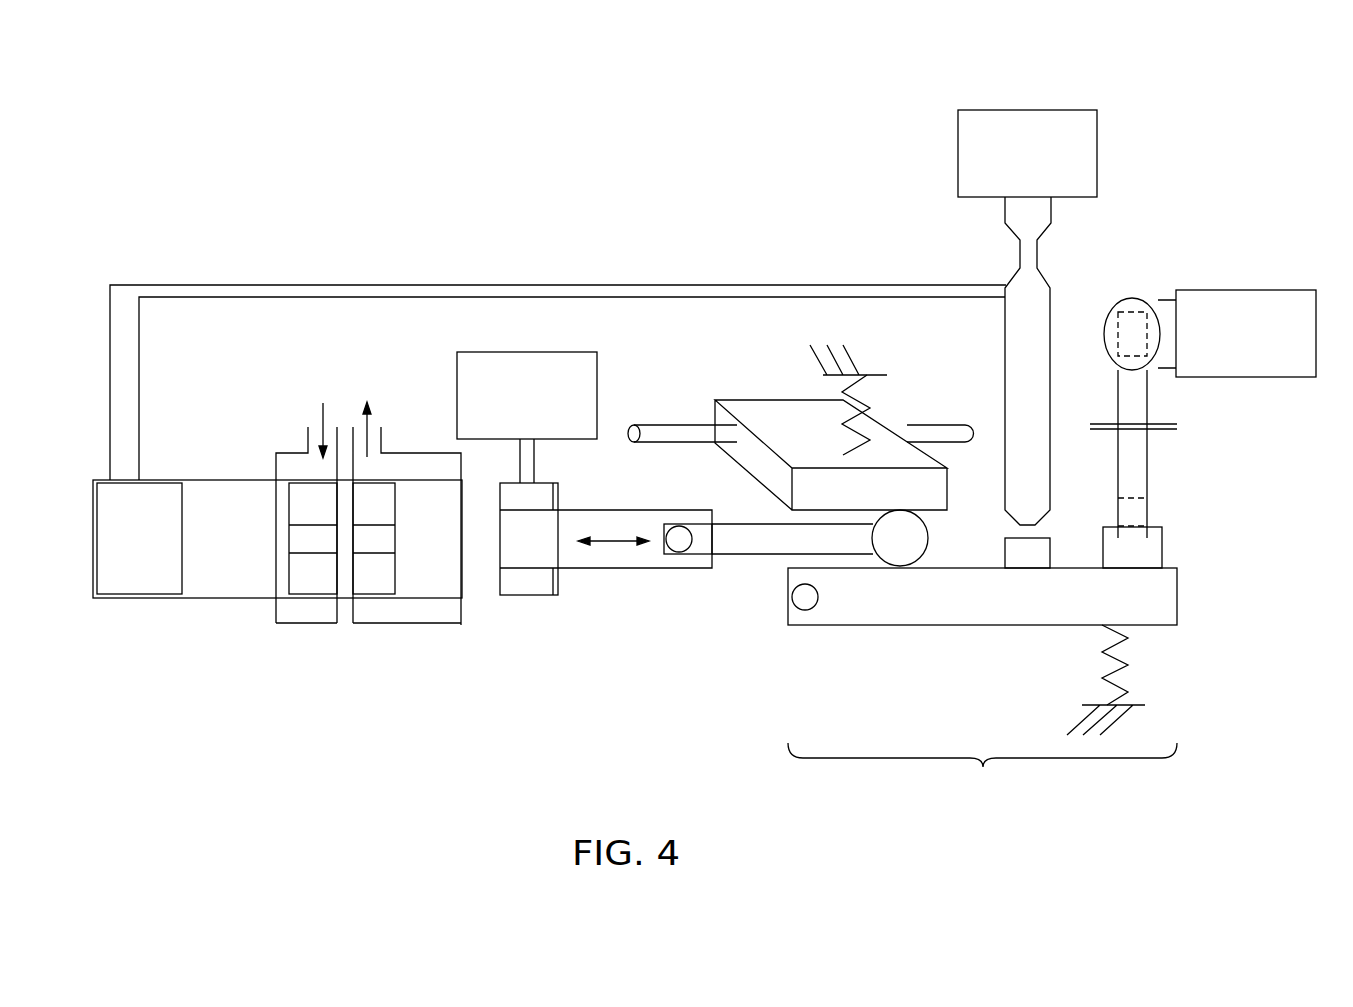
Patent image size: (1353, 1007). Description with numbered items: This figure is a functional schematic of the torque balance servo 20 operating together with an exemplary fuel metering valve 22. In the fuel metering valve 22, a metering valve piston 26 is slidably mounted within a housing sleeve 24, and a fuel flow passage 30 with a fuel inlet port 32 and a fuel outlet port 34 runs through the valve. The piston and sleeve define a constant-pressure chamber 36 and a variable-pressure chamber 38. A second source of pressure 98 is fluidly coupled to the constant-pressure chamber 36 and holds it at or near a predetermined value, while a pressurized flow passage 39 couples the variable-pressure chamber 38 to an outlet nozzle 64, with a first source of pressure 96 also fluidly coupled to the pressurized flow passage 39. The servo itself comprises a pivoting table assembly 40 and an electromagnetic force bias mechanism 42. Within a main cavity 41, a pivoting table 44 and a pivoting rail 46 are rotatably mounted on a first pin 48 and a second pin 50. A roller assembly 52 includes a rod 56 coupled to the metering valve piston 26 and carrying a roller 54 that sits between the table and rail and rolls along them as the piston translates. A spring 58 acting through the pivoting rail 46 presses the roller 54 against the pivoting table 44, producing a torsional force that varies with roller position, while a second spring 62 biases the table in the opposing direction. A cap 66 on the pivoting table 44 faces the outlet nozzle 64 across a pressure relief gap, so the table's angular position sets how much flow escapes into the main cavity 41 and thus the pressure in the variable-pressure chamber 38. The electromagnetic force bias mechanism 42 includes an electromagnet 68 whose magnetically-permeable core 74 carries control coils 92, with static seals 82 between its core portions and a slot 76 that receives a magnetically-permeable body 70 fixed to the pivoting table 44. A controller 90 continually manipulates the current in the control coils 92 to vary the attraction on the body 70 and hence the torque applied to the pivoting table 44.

The torque balance servo 20 is at (520, 144).
The fuel metering valve 22 is at (185, 390).
The housing sleeve 24 is at (137, 599).
The metering valve piston 26 is at (241, 554).
The fuel flow passage 30 is at (325, 517).
The fuel inlet port 32 is at (384, 441).
The fuel outlet port 34 is at (303, 441).
The constant-pressure chamber 36 is at (553, 492).
The variable-pressure chamber 38 is at (146, 552).
The pressurized flow passage 39 is at (448, 291).
The pivoting table assembly 40 is at (982, 771).
The main cavity 41 is at (986, 492).
The electromagnetic force bias mechanism 42 is at (1268, 226).
The pivoting table 44 is at (993, 609).
The pivoting rail 46 is at (806, 439).
The first pin 48 is at (793, 598).
The second pin 50 is at (680, 431).
The roller assembly 52 is at (710, 596).
The roller 54 is at (913, 550).
The rod 56 is at (803, 552).
The spring 58 is at (871, 383).
The second spring 62 is at (1100, 677).
The outlet nozzle 64 is at (1041, 500).
The cap 66 is at (1006, 553).
The electromagnet 68 is at (1125, 293).
The magnetically-permeable body 70 is at (1160, 554).
The magnetically-permeable core 74 is at (1147, 469).
The slot 76 is at (1121, 513).
The static seals 82 is at (1170, 420).
The controller 90 is at (1296, 378).
The control coils 92 is at (1108, 361).
The first source of pressure 96 is at (1070, 113).
The second source of pressure 98 is at (457, 361).